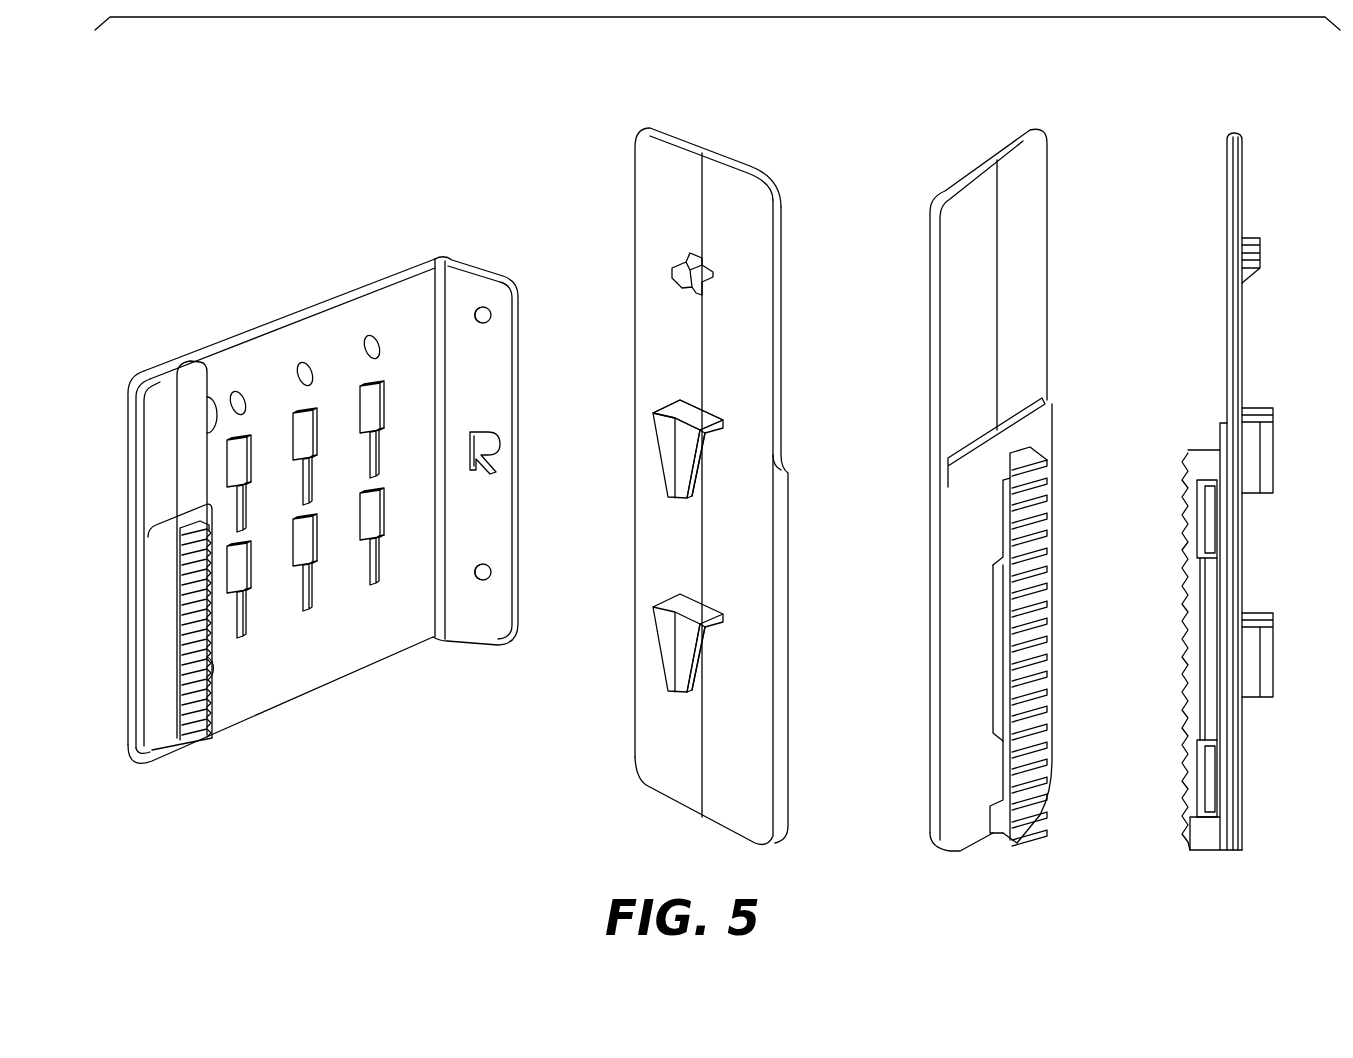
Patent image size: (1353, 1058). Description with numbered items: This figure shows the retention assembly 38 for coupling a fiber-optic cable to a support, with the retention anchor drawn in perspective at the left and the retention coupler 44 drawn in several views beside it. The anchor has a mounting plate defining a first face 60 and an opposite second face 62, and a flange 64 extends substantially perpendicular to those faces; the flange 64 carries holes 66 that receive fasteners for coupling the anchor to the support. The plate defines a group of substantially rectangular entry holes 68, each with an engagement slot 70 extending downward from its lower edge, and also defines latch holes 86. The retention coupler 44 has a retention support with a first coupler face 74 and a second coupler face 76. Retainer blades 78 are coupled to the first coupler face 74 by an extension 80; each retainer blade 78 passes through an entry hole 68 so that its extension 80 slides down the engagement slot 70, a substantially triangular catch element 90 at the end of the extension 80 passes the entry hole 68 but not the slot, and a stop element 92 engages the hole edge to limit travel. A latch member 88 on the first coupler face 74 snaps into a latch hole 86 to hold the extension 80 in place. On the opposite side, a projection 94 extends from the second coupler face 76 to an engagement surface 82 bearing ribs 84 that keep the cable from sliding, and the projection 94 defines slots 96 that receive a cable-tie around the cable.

The retention assembly 38 is at (372, 101).
The retention coupler 44 is at (163, 392).
The first face 60 is at (332, 660).
The second face 62 is at (247, 336).
The flange 64 is at (470, 279).
The holes 66 is at (492, 314).
The entry holes 68 is at (251, 470).
The engagement slot 70 is at (246, 518).
The first coupler face 74 is at (656, 355).
The second coupler face 76 is at (783, 386).
The retainer blade 78 is at (665, 427).
The extension 80 is at (693, 493).
The engagement surface 82 is at (202, 741).
The ribs 84 is at (1042, 522).
The latch holes 86 is at (245, 403).
The latch member 88 is at (702, 268).
The catch element 90 is at (700, 470).
The stop element 92 is at (715, 418).
The projection 94 is at (995, 660).
The slots 96 is at (1000, 527).